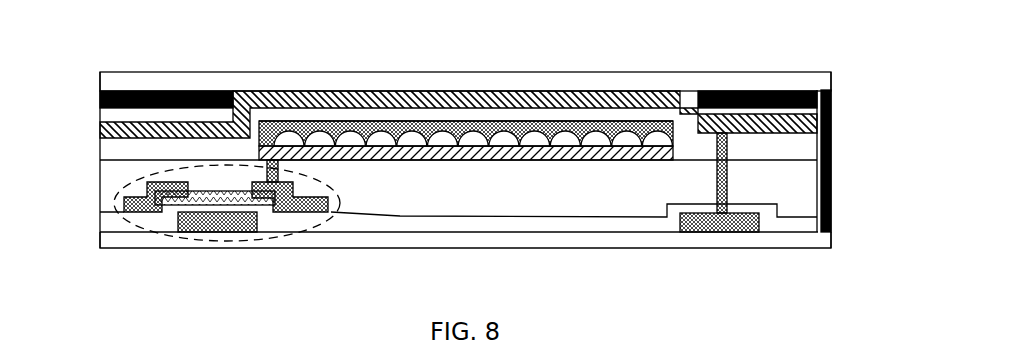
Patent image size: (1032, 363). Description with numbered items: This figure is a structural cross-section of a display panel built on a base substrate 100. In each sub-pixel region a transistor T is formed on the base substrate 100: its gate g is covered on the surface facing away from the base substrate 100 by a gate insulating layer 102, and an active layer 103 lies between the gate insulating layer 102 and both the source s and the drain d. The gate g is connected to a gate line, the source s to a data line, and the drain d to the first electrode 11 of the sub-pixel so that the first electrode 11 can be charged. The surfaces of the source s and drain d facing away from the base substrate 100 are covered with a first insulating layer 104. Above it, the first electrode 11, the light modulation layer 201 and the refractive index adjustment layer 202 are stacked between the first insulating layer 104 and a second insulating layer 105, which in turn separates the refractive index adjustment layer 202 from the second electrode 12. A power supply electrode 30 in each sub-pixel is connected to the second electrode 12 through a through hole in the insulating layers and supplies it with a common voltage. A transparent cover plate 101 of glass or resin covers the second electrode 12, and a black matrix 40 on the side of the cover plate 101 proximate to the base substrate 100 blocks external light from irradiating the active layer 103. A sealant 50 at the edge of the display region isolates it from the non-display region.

The cover plate 101 is at (113, 78).
The second insulating layer 105 is at (133, 157).
The transistor T is at (112, 205).
The base substrate 100 is at (117, 243).
The source s is at (130, 212).
The gate g is at (207, 232).
The active layer 103 is at (272, 205).
The drain d is at (318, 212).
The gate insulating layer 102 is at (453, 223).
The first insulating layer 104 is at (520, 207).
The power supply electrode 30 is at (718, 232).
The first electrode 11 is at (357, 137).
The light modulation layer 201 is at (410, 143).
The refractive index adjustment layer 202 is at (500, 122).
The second electrode 12 is at (557, 103).
The black matrix 40 is at (750, 90).
The sealant 50 is at (833, 172).